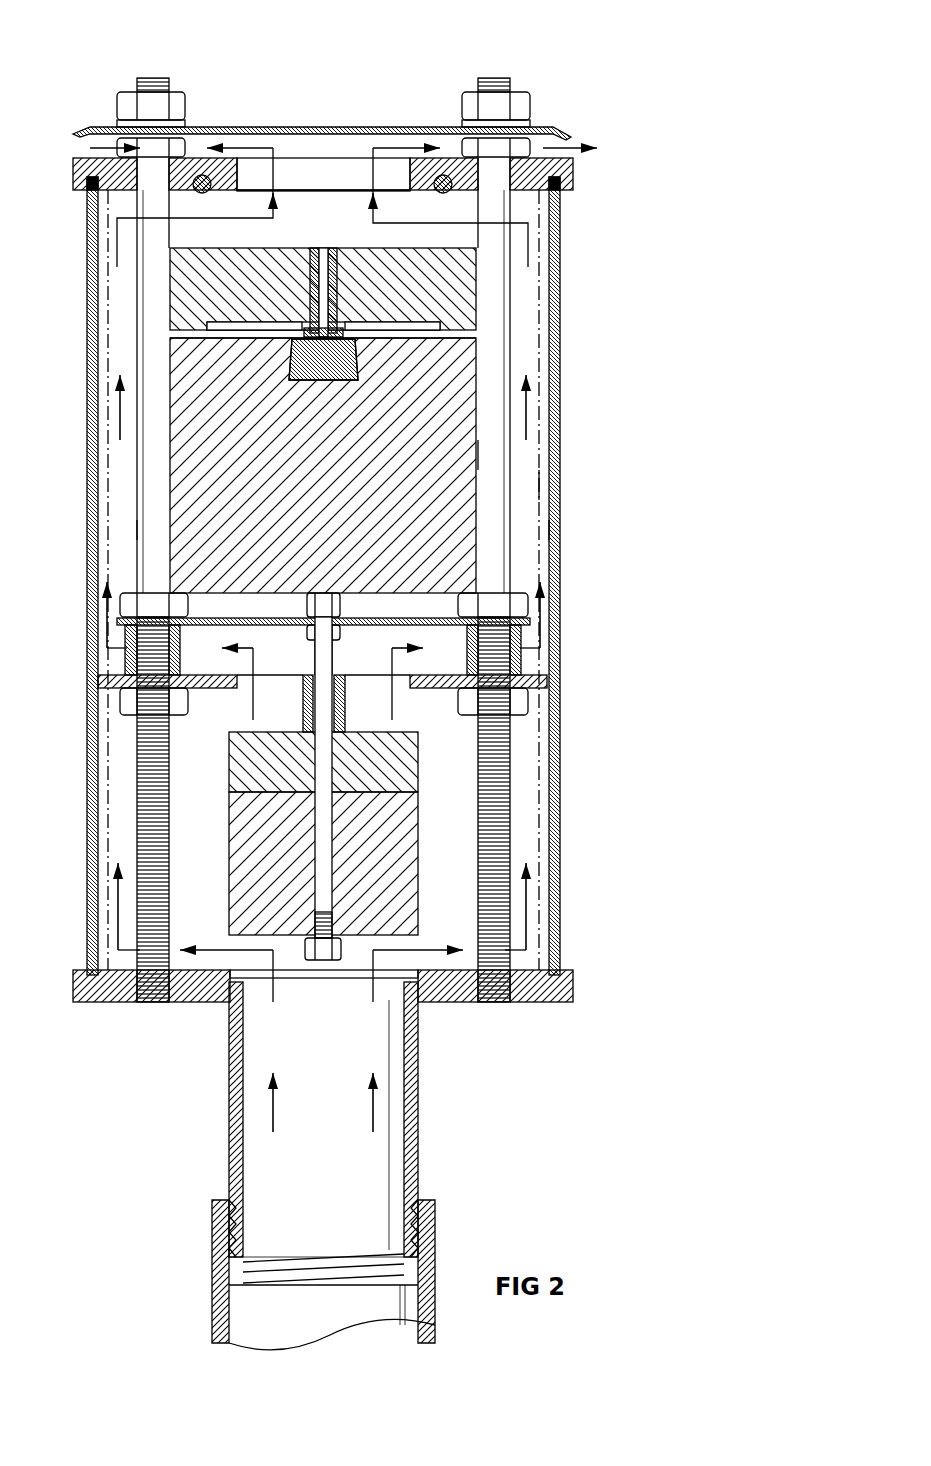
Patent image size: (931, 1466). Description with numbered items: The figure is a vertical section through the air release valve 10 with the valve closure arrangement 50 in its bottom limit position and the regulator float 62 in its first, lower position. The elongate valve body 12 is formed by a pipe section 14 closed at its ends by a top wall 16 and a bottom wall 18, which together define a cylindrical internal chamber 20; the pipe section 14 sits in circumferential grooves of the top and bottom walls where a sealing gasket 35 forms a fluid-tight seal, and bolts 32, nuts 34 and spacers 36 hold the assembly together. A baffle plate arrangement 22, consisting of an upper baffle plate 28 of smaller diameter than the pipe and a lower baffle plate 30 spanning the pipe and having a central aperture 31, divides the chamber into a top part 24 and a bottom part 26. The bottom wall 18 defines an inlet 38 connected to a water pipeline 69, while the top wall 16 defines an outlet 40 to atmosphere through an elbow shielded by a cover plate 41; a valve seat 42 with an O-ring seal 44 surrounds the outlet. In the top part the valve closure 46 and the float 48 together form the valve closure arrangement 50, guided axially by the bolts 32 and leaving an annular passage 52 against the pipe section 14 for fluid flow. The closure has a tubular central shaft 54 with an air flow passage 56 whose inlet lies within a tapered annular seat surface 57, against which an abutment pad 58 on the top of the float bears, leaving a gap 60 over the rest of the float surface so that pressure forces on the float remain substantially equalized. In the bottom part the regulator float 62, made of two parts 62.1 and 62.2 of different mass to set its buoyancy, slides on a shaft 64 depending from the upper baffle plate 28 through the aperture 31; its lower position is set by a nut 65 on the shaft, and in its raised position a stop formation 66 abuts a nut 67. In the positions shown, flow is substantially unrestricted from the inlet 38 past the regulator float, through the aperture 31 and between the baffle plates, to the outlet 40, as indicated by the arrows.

The air release valve 10 is at (565, 73).
The valve body 12 is at (553, 240).
The pipe section 14 is at (553, 327).
The top wall 16 is at (573, 168).
The bottom wall 18 is at (528, 992).
The internal chamber 20 is at (525, 300).
The baffle plate arrangement 22 is at (530, 660).
The top part 24 is at (522, 528).
The bottom part 26 is at (525, 782).
The upper baffle plate 28 is at (428, 618).
The lower baffle plate 30 is at (552, 688).
The central aperture 31 is at (400, 692).
The bolts 32 is at (155, 535).
The nuts 34 is at (128, 104).
The sealing gasket 35 is at (557, 182).
The spacers 36 is at (130, 660).
The inlet 38 is at (323, 978).
The outlet 40 is at (310, 175).
The cover plate 41 is at (555, 130).
The valve seat 42 is at (183, 201).
The O-ring seal 44 is at (202, 175).
The valve closure 46 is at (252, 268).
The float 48 is at (200, 478).
The valve closure arrangement 50 is at (482, 456).
The annular passage 52 is at (519, 482).
The tubular central shaft 54 is at (340, 282).
The air flow passage 56 is at (330, 248).
The annular seat surface 57 is at (345, 336).
The abutment pad 58 is at (330, 378).
The gap 60 is at (200, 340).
The regulator float 62 is at (291, 829).
The first part of regulator float 62.1 is at (240, 838).
The second part of regulator float 62.2 is at (245, 768).
The shaft 64 is at (325, 882).
The nut 65 is at (333, 960).
The stop formation 66 is at (303, 705).
The nut 67 is at (340, 632).
The water pipeline 69 is at (215, 1305).